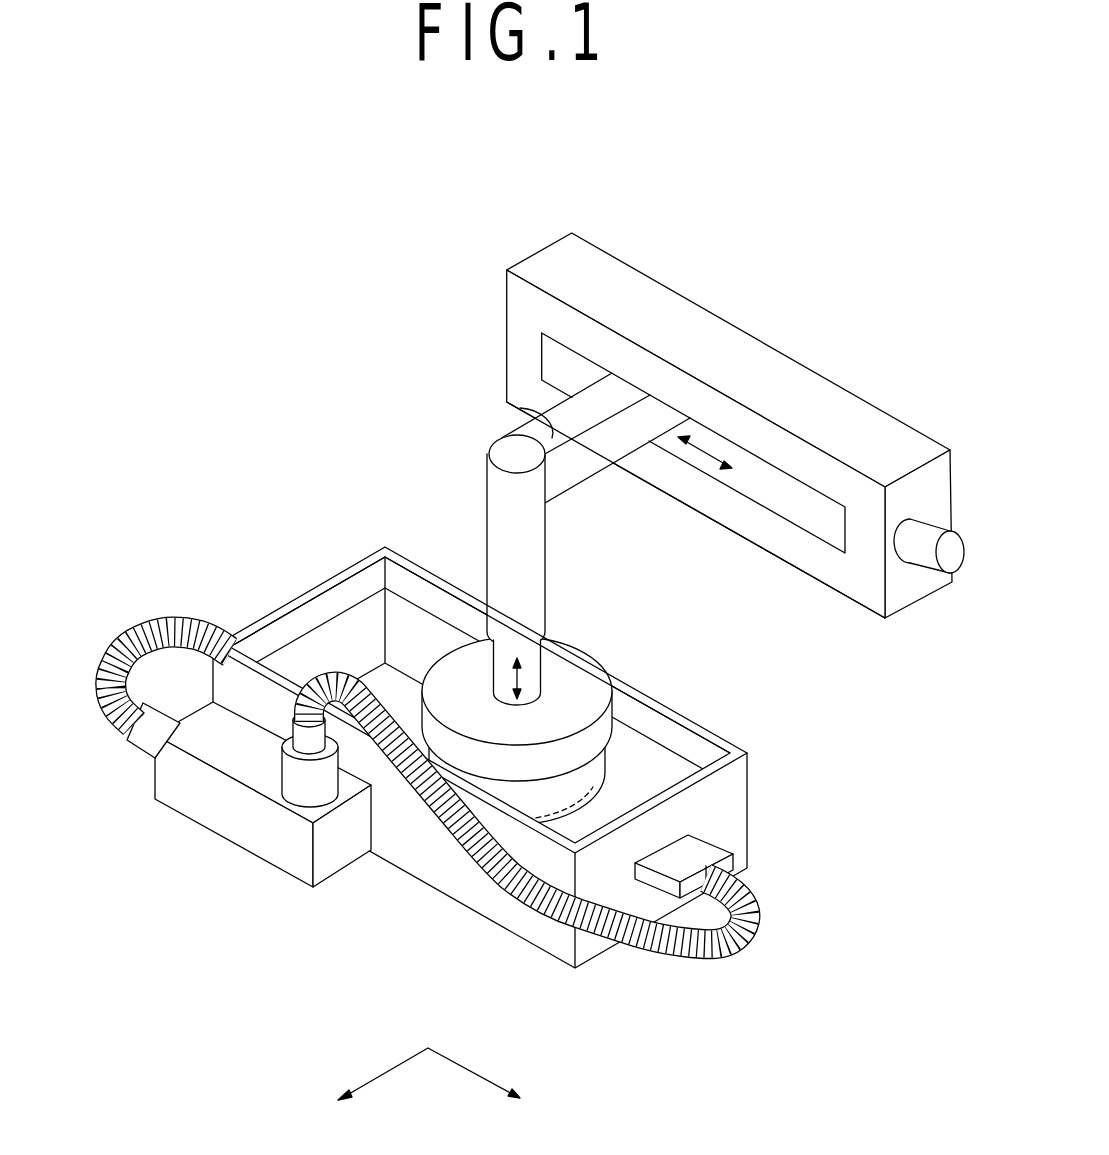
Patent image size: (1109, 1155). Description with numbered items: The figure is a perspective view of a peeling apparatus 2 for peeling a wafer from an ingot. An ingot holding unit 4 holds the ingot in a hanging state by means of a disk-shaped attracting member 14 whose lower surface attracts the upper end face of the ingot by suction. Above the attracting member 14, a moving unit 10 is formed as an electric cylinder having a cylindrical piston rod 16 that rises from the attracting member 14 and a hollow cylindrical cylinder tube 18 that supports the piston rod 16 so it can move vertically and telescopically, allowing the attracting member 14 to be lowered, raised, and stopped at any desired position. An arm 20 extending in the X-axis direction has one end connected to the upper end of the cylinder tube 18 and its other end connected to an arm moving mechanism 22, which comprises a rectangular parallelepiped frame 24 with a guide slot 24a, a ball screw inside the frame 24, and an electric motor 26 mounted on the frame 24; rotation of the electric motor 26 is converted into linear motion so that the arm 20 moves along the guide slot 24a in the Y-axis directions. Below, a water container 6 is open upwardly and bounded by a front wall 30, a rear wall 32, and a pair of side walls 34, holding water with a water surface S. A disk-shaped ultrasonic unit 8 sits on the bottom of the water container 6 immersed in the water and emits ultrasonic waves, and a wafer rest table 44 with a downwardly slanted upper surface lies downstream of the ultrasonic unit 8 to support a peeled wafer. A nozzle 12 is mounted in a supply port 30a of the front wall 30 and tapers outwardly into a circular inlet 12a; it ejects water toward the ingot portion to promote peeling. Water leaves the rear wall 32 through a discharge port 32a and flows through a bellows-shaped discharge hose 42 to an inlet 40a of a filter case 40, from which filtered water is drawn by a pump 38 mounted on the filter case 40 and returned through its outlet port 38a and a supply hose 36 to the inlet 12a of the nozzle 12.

The peeling apparatus 2 is at (262, 502).
The ingot holding unit 4 is at (595, 679).
The water container 6 is at (742, 747).
The ultrasonic unit 8 is at (605, 755).
The moving unit 10 is at (645, 540).
The nozzle 12 is at (690, 857).
The inlet 12a is at (720, 873).
The attracting member 14 is at (615, 705).
The piston rod 16 is at (530, 663).
The cylinder tube 18 is at (530, 545).
The arm 20 is at (515, 409).
The arm moving mechanism 22 is at (705, 302).
The frame 24 is at (738, 352).
The guide slot 24a is at (790, 487).
The electric motor 26 is at (928, 545).
The front wall 30 is at (733, 785).
The supply port 30a is at (658, 843).
The rear wall 32 is at (262, 618).
The discharge port 32a is at (316, 672).
The side walls 34 is at (412, 585).
The supply hose 36 is at (668, 957).
The pump 38 is at (303, 783).
The outlet port 38a is at (283, 722).
The filter case 40 is at (188, 787).
The inlet 40a is at (122, 717).
The discharge hose 42 is at (150, 622).
The wafer rest table 44 is at (410, 690).
The water surface S is at (335, 612).